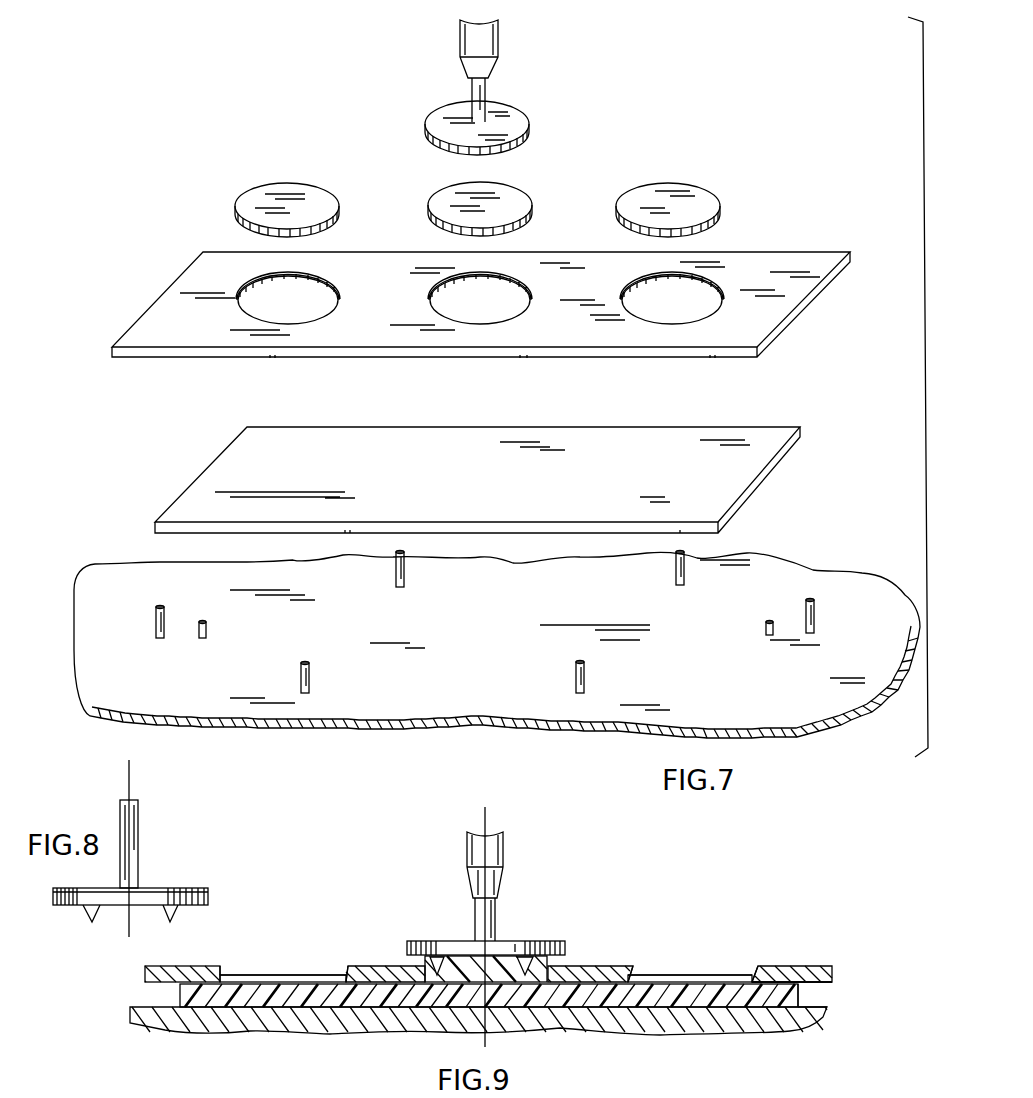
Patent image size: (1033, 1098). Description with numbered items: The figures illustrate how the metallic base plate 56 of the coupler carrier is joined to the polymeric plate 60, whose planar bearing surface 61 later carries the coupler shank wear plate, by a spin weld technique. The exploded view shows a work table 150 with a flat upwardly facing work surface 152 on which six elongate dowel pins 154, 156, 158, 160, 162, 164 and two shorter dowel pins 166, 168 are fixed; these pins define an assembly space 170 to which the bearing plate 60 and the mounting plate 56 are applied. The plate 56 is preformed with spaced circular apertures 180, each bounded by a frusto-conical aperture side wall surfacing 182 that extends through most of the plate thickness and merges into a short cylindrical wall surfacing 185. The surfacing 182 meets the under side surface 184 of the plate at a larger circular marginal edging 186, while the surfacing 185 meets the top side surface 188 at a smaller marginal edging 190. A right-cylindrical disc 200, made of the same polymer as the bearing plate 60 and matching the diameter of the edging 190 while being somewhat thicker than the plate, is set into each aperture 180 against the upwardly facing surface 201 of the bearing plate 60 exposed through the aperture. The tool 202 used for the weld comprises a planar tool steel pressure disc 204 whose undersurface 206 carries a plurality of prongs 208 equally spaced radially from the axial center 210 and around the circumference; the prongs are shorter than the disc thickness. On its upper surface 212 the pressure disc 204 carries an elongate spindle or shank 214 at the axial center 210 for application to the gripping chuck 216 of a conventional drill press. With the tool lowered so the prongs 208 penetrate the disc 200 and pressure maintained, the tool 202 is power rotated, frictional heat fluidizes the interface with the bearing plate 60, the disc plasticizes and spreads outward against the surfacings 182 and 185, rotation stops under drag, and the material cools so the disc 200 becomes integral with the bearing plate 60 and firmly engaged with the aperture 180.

In FIG. 7, the metallic base plate 56 is at (825, 258).
In FIG. 9, the metallic base plate 56 is at (588, 968).
In FIG. 7, the polymeric plate 60 is at (765, 430).
In FIG. 9, the polymeric plate 60 is at (360, 1010).
In FIG. 9, the bearing surface 61 is at (785, 1008).
In FIG. 7, the work table 150 is at (823, 582).
In FIG. 7, the work surface 152 is at (775, 572).
In FIG. 7, the dowel pin 154 is at (312, 680).
In FIG. 7, the dowel pin 156 is at (587, 680).
In FIG. 7, the dowel pin 158 is at (405, 575).
In FIG. 7, the dowel pin 160 is at (687, 573).
In FIG. 7, the dowel pin 162 is at (155, 622).
In FIG. 7, the dowel pin 164 is at (812, 620).
In FIG. 7, the shorter dowel pin 166 is at (200, 640).
In FIG. 7, the shorter dowel pin 168 is at (767, 633).
In FIG. 7, the assembly space 170 is at (486, 684).
In FIG. 7, the aperture 180 is at (283, 304).
In FIG. 9, the aperture 180 is at (340, 966).
In FIG. 7, the aperture side wall surfacing 182 is at (255, 277).
In FIG. 9, the aperture side wall surfacing 182 is at (293, 974).
In FIG. 9, the under side surface 184 is at (805, 966).
In FIG. 9, the cylindrical wall surfacing 185 is at (253, 975).
In FIG. 9, the marginal edging 186 is at (220, 966).
In FIG. 9, the top side surface 188 is at (812, 990).
In FIG. 9, the marginal edging 190 is at (210, 1020).
In FIG. 7, the disc 200 is at (325, 198).
In FIG. 9, the disc 200 is at (440, 985).
In FIG. 9, the upwardly facing surface 201 is at (705, 978).
In FIG. 8, the tool 202 is at (153, 862).
In FIG. 9, the tool 202 is at (445, 921).
In FIG. 7, the pressure disc 204 is at (522, 126).
In FIG. 8, the pressure disc 204 is at (200, 888).
In FIG. 9, the pressure disc 204 is at (420, 941).
In FIG. 8, the undersurface 206 is at (195, 905).
In FIG. 9, the undersurface 206 is at (410, 956).
In FIG. 8, the prongs 208 is at (165, 912).
In FIG. 9, the prongs 208 is at (460, 985).
In FIG. 8, the axial center 210 is at (131, 788).
In FIG. 9, the axial center 210 is at (487, 815).
In FIG. 8, the upper surface 212 is at (170, 888).
In FIG. 9, the upper surface 212 is at (525, 958).
In FIG. 8, the spindle or shank 214 is at (138, 835).
In FIG. 9, the spindle or shank 214 is at (496, 905).
In FIG. 9, the gripping chuck 216 is at (519, 855).